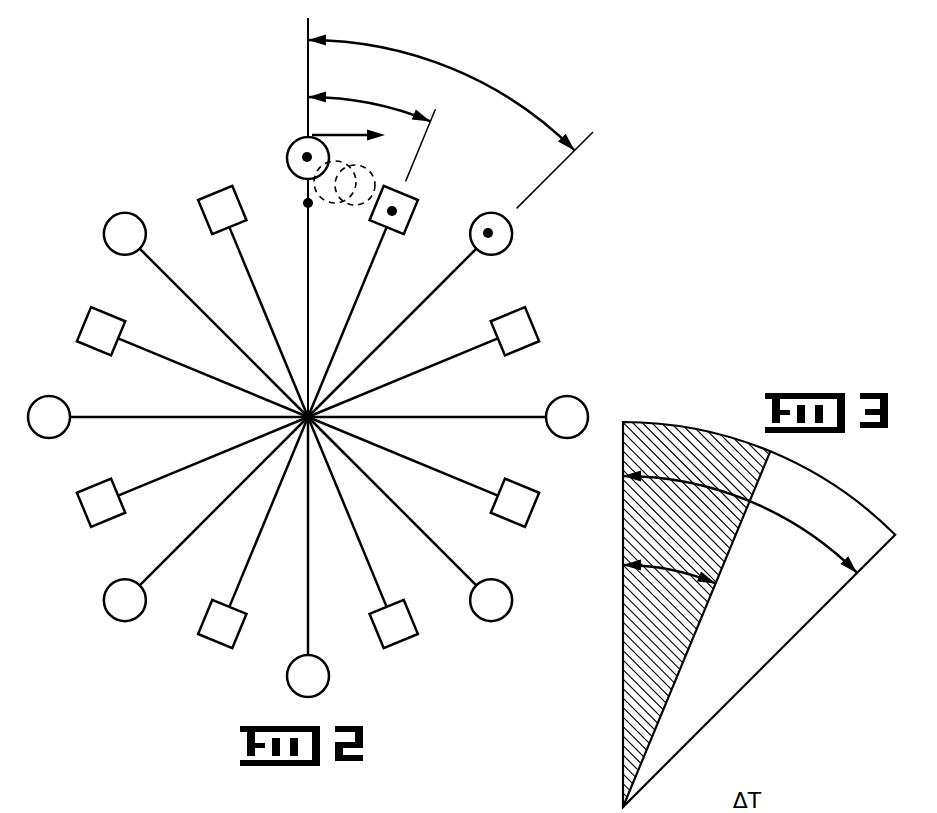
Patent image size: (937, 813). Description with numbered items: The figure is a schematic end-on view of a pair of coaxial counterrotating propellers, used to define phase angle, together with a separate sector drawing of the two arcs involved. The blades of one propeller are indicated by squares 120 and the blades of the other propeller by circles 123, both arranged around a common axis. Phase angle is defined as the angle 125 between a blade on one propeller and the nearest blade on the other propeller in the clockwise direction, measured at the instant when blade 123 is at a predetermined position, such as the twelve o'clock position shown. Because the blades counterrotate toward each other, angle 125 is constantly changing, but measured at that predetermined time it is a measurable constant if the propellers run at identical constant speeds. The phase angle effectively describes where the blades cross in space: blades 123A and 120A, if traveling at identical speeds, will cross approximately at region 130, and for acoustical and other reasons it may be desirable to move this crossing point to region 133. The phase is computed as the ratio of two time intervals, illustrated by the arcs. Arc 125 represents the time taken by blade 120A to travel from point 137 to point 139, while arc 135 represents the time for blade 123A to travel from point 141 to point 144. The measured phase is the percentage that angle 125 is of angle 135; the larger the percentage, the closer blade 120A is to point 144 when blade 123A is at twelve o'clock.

In FIG. 2, the squares 120 is at (534, 324).
In FIG. 2, the blade 120A is at (410, 194).
In FIG. 2, the circles 123 is at (510, 234).
In FIG. 2, the blade 123A is at (292, 141).
In FIG. 2, the angle 125 is at (373, 96).
In FIG. 3, the angle 125 is at (661, 565).
In FIG. 2, the region 130 is at (373, 173).
In FIG. 2, the region 133 is at (323, 208).
In FIG. 2, the arc 135 is at (452, 66).
In FIG. 3, the arc 135 is at (806, 529).
In FIG. 2, the point 137 is at (392, 215).
In FIG. 2, the point 139 is at (305, 203).
In FIG. 2, the point 141 is at (304, 157).
In FIG. 2, the point 144 is at (488, 240).